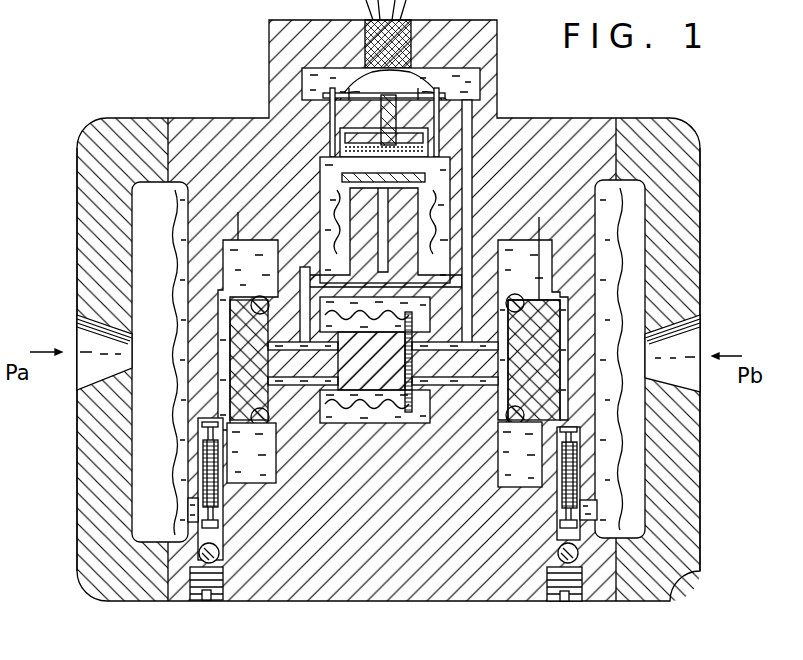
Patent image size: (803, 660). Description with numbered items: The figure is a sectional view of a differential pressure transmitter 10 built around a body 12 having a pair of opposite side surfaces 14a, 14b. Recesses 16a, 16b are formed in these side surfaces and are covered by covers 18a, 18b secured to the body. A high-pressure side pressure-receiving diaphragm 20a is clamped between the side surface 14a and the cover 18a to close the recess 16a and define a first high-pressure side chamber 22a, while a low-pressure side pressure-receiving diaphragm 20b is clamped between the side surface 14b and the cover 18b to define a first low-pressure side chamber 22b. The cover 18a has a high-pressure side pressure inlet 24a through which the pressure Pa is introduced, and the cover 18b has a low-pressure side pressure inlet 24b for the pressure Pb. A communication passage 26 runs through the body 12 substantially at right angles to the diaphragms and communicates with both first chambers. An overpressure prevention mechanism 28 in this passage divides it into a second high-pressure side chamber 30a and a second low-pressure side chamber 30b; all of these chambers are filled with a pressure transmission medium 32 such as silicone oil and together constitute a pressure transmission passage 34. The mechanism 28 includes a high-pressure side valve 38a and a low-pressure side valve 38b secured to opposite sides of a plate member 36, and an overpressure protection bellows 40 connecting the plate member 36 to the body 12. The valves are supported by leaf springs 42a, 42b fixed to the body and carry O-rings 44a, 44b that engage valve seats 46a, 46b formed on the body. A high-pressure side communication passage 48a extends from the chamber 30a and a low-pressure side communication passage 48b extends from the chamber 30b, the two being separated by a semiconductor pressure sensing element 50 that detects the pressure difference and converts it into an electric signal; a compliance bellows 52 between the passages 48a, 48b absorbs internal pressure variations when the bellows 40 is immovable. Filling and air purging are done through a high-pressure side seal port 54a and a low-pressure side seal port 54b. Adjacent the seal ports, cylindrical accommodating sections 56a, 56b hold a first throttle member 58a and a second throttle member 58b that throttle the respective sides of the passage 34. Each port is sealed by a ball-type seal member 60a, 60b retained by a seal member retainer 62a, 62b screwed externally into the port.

The differential pressure transmitter 10 is at (131, 107).
The body 12 is at (518, 126).
The side surface 14a is at (165, 130).
The side surface 14b is at (627, 128).
The recess 16a is at (178, 195).
The recess 16b is at (655, 191).
The cover 18a is at (77, 248).
The cover 18b is at (690, 258).
The high-pressure side pressure-receiving diaphragm 20a is at (173, 230).
The low-pressure side pressure-receiving diaphragm 20b is at (650, 232).
The first high-pressure side chamber 22a is at (178, 281).
The first low-pressure side chamber 22b is at (640, 456).
The high-pressure side pressure inlet 24a is at (86, 338).
The low-pressure side pressure inlet 24b is at (694, 342).
The communication passage 26 is at (456, 384).
The overpressure prevention mechanism 28 is at (365, 414).
The second high-pressure side chamber 30a is at (282, 482).
The second low-pressure side chamber 30b is at (500, 484).
The pressure transmission medium 32 is at (258, 250).
The pressure transmission passage 34 is at (328, 414).
The plate member 36 is at (432, 424).
The high-pressure side valve 38a is at (245, 382).
The low-pressure side valve 38b is at (560, 388).
The overpressure protection bellows 40 is at (401, 414).
The leaf spring 42a is at (246, 484).
The leaf spring 42b is at (506, 500).
The O-ring 44a is at (272, 445).
The O-ring 44b is at (497, 470).
The valve seat 46a is at (292, 440).
The valve seat 46b is at (440, 408).
The high-pressure side communication passage 48a is at (300, 272).
The low-pressure side communication passage 48b is at (472, 190).
The semiconductor pressure sensing element 50 is at (420, 150).
The compliance bellows 52 is at (336, 195).
The high-pressure side seal port 54a is at (190, 568).
The low-pressure side seal port 54b is at (585, 568).
The accommodating section 56a is at (206, 433).
The second valve bore 56b is at (577, 483).
The first throttle member 58a is at (208, 476).
The second throttle member 58b is at (590, 491).
The seal member 60a is at (200, 556).
The seal member 60b is at (580, 553).
The seal member retainer 62a is at (195, 603).
The seal member retainer 62b is at (585, 603).